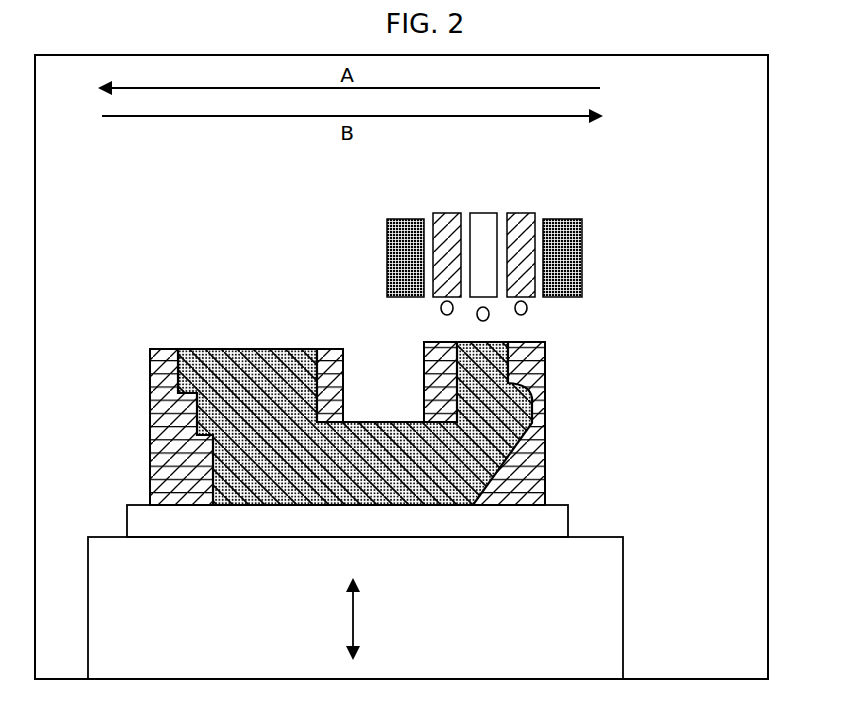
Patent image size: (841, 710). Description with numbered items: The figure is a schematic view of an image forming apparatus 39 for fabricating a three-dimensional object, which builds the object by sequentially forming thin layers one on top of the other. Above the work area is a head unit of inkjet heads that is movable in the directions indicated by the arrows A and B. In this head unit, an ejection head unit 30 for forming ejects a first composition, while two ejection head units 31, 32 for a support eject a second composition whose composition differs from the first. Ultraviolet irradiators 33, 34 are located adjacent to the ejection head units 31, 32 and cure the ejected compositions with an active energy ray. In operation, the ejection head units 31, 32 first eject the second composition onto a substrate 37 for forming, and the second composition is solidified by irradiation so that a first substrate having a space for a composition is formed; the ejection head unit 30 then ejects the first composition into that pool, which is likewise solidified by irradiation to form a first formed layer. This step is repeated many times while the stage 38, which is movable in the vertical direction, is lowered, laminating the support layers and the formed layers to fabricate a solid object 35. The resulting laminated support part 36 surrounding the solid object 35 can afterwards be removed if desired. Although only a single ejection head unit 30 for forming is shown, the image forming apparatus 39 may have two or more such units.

The ejection head unit for forming 30 is at (483, 213).
The ejection head unit for a support 31 is at (455, 213).
The ejection head unit for a support 32 is at (520, 213).
The ultraviolet irradiator 33 is at (387, 236).
The ultraviolet irradiator 34 is at (583, 236).
The solid object 35 is at (247, 348).
The laminated support part 36 is at (546, 382).
The substrate for forming 37 is at (569, 519).
The stage 38 is at (624, 550).
The image forming apparatus 39 is at (768, 79).